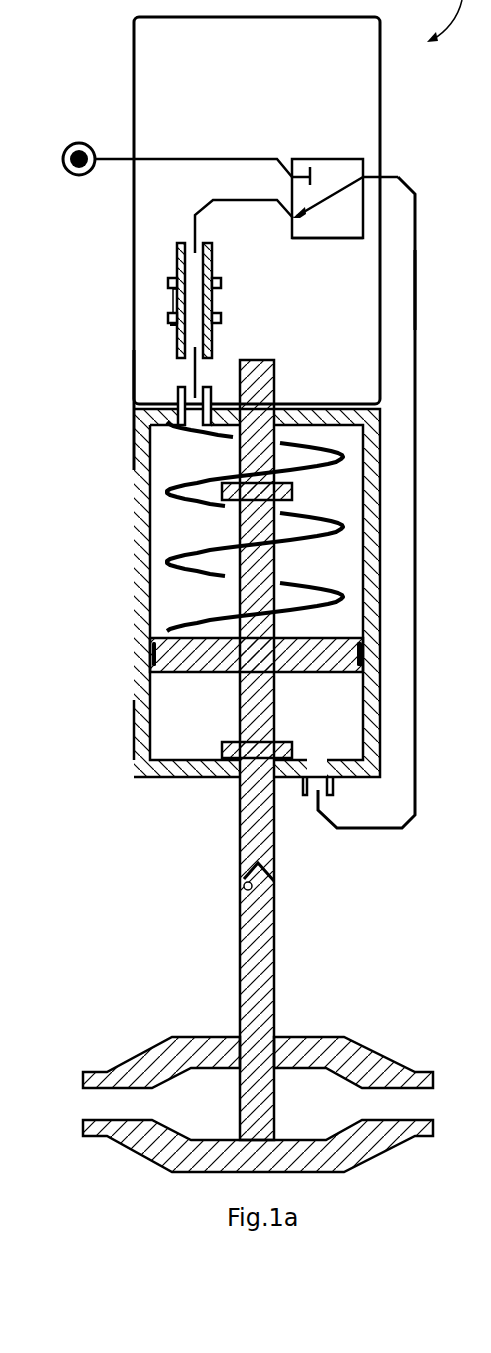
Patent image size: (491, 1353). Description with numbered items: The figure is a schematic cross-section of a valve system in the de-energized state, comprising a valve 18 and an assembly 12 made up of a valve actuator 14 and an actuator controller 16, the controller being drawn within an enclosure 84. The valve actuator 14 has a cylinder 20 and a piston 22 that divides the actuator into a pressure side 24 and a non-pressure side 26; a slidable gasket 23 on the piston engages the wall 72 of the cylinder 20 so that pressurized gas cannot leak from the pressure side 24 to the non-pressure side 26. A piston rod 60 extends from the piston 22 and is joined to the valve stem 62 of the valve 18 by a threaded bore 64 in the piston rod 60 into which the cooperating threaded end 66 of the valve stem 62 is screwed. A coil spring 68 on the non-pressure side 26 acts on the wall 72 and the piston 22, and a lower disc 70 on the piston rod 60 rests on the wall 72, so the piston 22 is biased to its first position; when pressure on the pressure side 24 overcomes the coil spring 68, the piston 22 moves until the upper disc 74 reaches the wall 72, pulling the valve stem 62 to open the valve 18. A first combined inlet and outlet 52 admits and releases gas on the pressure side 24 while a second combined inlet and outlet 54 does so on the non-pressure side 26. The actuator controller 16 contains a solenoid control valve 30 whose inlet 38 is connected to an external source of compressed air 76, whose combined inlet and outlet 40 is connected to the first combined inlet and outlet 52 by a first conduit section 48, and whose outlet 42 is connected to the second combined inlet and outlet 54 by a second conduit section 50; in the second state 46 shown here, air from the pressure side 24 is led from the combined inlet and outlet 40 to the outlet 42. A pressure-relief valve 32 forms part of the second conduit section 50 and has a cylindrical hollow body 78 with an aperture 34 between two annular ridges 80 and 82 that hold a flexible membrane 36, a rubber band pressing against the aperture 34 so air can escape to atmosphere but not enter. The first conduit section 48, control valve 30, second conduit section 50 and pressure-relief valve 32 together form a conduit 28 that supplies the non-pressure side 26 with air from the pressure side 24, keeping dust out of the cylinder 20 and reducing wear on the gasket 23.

The assembly 12 is at (125, 382).
The valve actuator 14 is at (122, 752).
The actuator controller 16 is at (125, 362).
The valve 18 is at (124, 1043).
The cylinder 20 is at (133, 723).
The piston 22 is at (173, 653).
The slidable gasket 23 is at (163, 635).
The pressure side 24 is at (175, 692).
The non-pressure side 26 is at (173, 607).
The conduit 28 is at (426, 413).
The control valve 30 is at (334, 155).
The pressure-relief valve 32 is at (170, 345).
The aperture 34 is at (187, 300).
The flexible membrane 36 is at (172, 295).
The inlet 38 is at (297, 188).
The combined inlet and outlet 40 is at (298, 214).
The outlet 42 is at (303, 238).
The second state 46 is at (315, 158).
The first conduit section 48 is at (416, 291).
The second conduit section 50 is at (212, 216).
The first combined inlet and outlet 52 is at (331, 778).
The second combined inlet and outlet 54 is at (193, 413).
The piston rod 60 is at (240, 815).
The valve stem 62 is at (240, 920).
The threaded bore 64 is at (242, 857).
The threaded end 66 is at (240, 889).
The coil spring 68 is at (182, 553).
The lower disc 70 is at (293, 752).
The wall 72 is at (160, 487).
The upper disc 74 is at (293, 495).
The external source of compressed air 76 is at (88, 142).
The cylindrical hollow body 78 is at (170, 325).
The annular ridge 80 is at (168, 280).
The annular ridge 82 is at (168, 309).
The control housing 84 is at (133, 88).